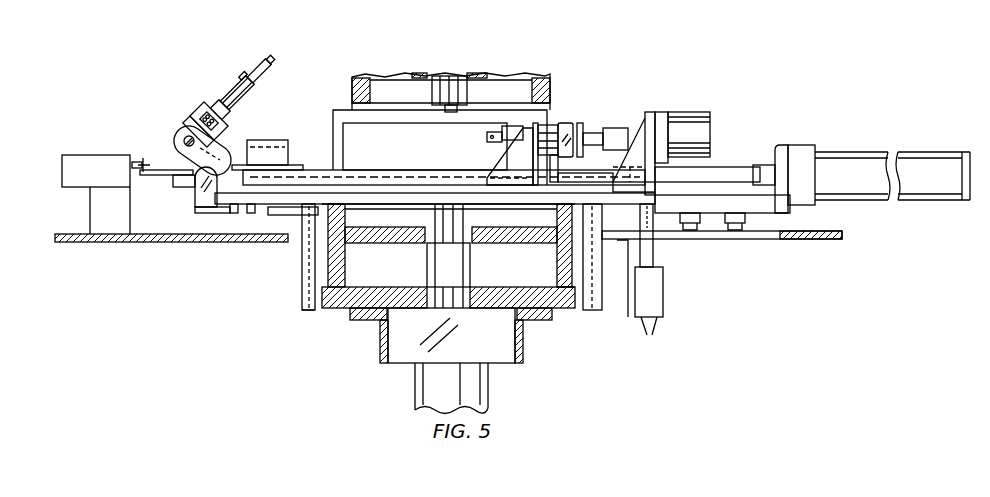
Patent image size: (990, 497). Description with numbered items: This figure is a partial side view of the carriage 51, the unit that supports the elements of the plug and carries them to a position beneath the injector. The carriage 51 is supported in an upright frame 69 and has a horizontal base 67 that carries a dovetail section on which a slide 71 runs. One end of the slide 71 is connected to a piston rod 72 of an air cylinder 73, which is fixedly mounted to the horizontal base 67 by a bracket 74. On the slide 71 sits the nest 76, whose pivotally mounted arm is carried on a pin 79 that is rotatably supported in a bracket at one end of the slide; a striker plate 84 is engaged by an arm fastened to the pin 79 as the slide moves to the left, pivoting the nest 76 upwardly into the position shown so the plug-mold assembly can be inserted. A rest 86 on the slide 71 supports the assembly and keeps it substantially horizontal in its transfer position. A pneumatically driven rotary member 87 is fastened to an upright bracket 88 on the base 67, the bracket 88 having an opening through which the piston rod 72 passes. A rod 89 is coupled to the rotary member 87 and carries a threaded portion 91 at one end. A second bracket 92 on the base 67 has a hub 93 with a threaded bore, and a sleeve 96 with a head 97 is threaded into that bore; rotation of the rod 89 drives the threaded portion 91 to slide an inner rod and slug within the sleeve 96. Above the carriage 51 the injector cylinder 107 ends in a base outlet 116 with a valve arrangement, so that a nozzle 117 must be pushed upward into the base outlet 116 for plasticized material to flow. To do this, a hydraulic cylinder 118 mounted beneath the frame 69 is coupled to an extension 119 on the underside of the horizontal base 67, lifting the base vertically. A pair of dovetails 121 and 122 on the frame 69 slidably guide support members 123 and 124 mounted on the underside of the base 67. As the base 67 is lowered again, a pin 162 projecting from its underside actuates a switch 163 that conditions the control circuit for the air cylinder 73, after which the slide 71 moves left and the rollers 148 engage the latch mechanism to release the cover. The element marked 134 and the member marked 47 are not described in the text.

The carriage 51 is at (698, 46).
The nest 76 is at (224, 77).
The pin 79 is at (184, 135).
The roller 148 is at (146, 160).
The rest 86 is at (290, 154).
The control unit 134 is at (90, 203).
The slide 71 is at (188, 187).
The striker plate 84 is at (198, 204).
The horizontal base 67 is at (232, 206).
The cylinder 107 is at (478, 78).
The base outlet 116 is at (432, 91).
The nozzle 117 is at (458, 107).
The sleeve or cylinder 96 is at (510, 128).
The second bracket 92 is at (505, 150).
The hub 93 is at (548, 124).
The head 97 is at (580, 124).
The threaded portion 91 is at (594, 133).
The rod 89 is at (598, 151).
The upright bracket 88 is at (637, 123).
The pneumatically driven rotary member 87 is at (685, 112).
The piston rod 72 is at (730, 167).
The bracket 74 is at (777, 146).
The air cylinder 73 is at (835, 152).
The base 47 is at (818, 231).
The pin 162 is at (640, 222).
The switch 163 is at (658, 280).
The support member 123 is at (302, 284).
The dovetail 121 is at (312, 312).
The dovetail 122 is at (572, 300).
The support member 124 is at (596, 310).
The upright frame 69 is at (404, 232).
The extension 119 is at (462, 217).
The hydraulic cylinder 118 is at (487, 372).